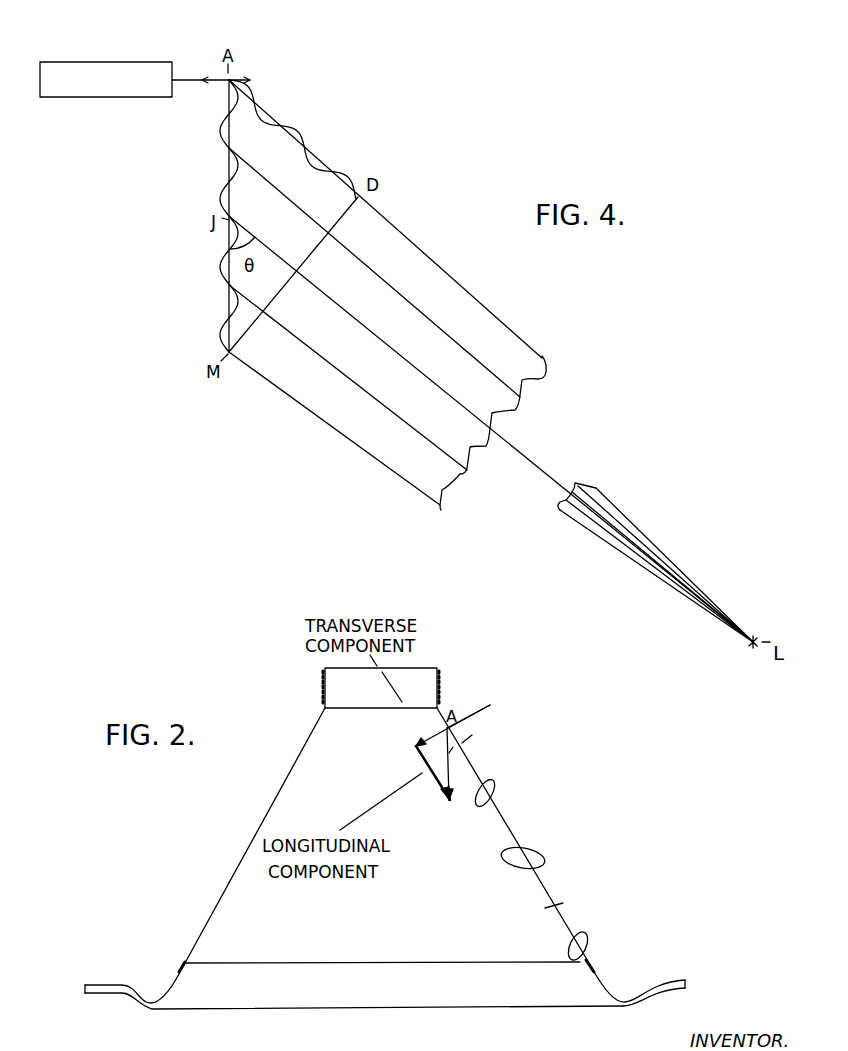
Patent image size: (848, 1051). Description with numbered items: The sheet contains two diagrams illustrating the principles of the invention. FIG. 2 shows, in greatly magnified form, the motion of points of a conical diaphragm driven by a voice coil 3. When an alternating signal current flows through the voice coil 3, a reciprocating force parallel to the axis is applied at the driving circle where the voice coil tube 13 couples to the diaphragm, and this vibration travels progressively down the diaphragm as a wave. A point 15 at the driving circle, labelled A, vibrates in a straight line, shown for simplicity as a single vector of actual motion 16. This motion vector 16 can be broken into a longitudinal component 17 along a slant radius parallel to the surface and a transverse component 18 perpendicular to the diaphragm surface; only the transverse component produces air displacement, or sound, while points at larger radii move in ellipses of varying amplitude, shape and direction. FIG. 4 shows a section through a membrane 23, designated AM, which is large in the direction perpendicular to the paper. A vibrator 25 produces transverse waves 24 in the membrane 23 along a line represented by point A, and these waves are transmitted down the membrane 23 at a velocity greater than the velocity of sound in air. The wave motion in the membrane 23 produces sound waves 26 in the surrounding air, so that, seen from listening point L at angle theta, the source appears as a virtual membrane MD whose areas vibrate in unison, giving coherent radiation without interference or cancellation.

In FIG. 2, the voice coil 3 is at (441, 678).
In FIG. 2, the voice coil tube 13 is at (438, 700).
In FIG. 2, the point on the diaphragm at the driving circle 15 is at (480, 710).
In FIG. 2, the straight-line motion 16 is at (472, 733).
In FIG. 2, the longitudinal component 17 is at (424, 770).
In FIG. 2, the transverse component 18 is at (426, 738).
In FIG. 4, the membrane 23 is at (227, 170).
In FIG. 4, the transverse waves 24 is at (220, 136).
In FIG. 4, the vibrator 25 is at (91, 62).
In FIG. 4, the sound waves 26 is at (265, 113).